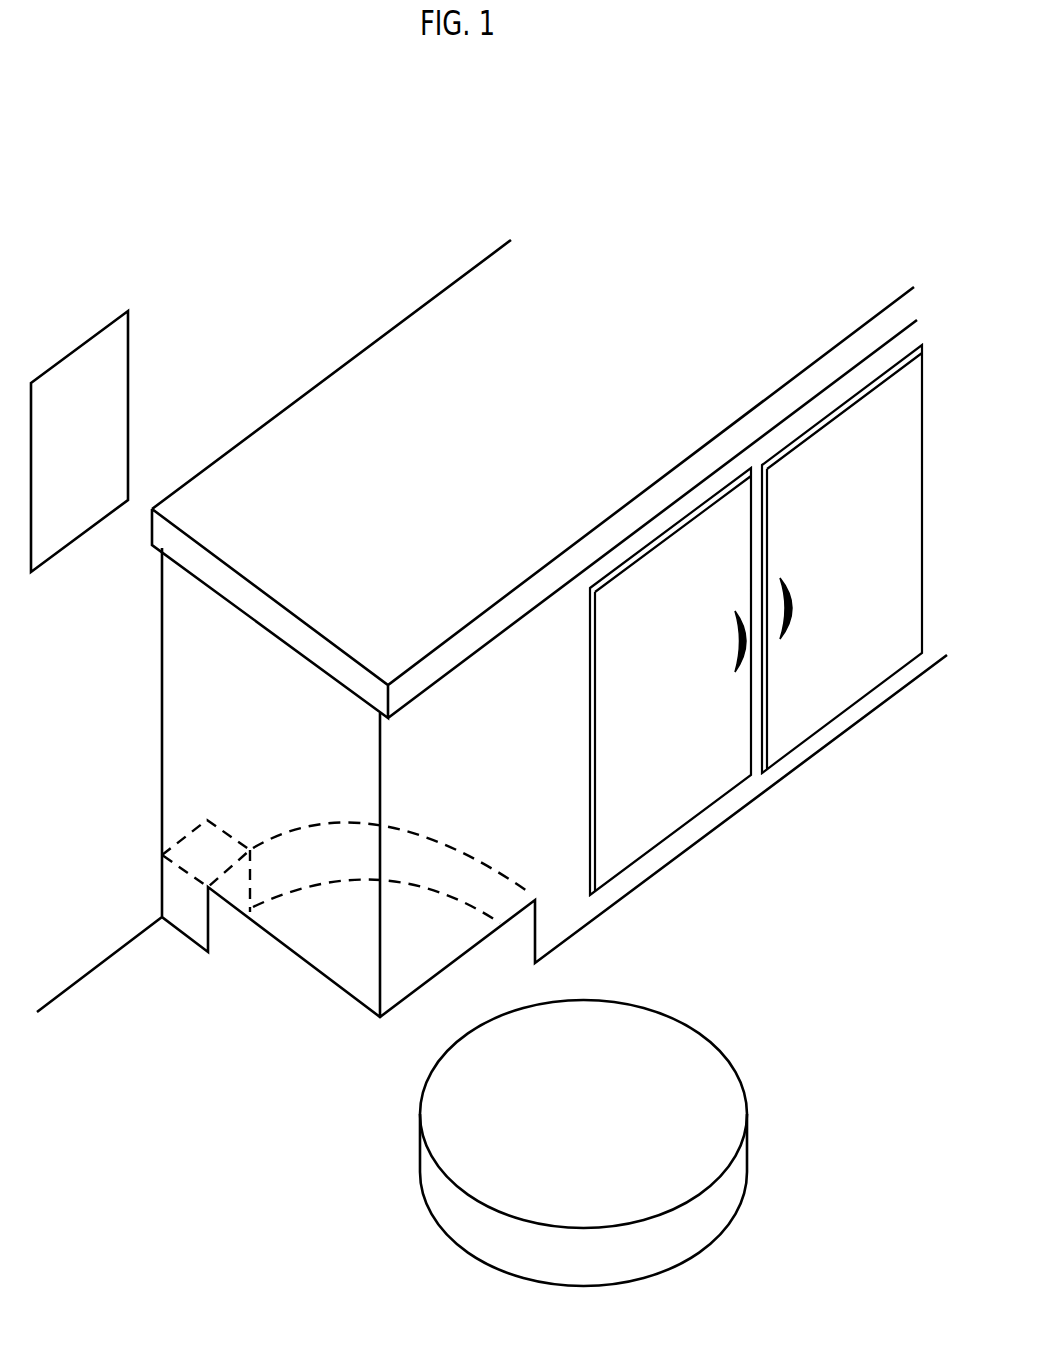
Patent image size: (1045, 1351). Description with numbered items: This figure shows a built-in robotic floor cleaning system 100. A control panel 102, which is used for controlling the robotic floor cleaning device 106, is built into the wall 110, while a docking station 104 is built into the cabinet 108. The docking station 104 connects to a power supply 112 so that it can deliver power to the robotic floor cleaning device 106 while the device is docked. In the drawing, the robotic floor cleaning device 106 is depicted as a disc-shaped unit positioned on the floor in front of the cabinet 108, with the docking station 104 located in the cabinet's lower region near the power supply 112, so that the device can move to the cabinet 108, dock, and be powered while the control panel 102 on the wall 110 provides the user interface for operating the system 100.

The built-in robotic floor cleaning system 100 is at (595, 133).
The control panel 102 is at (81, 345).
The docking station 104 is at (472, 845).
The robotic floor cleaning device 106 is at (747, 1098).
The cabinet 108 is at (162, 752).
The wall 110 is at (275, 328).
The power supply 112 is at (162, 889).